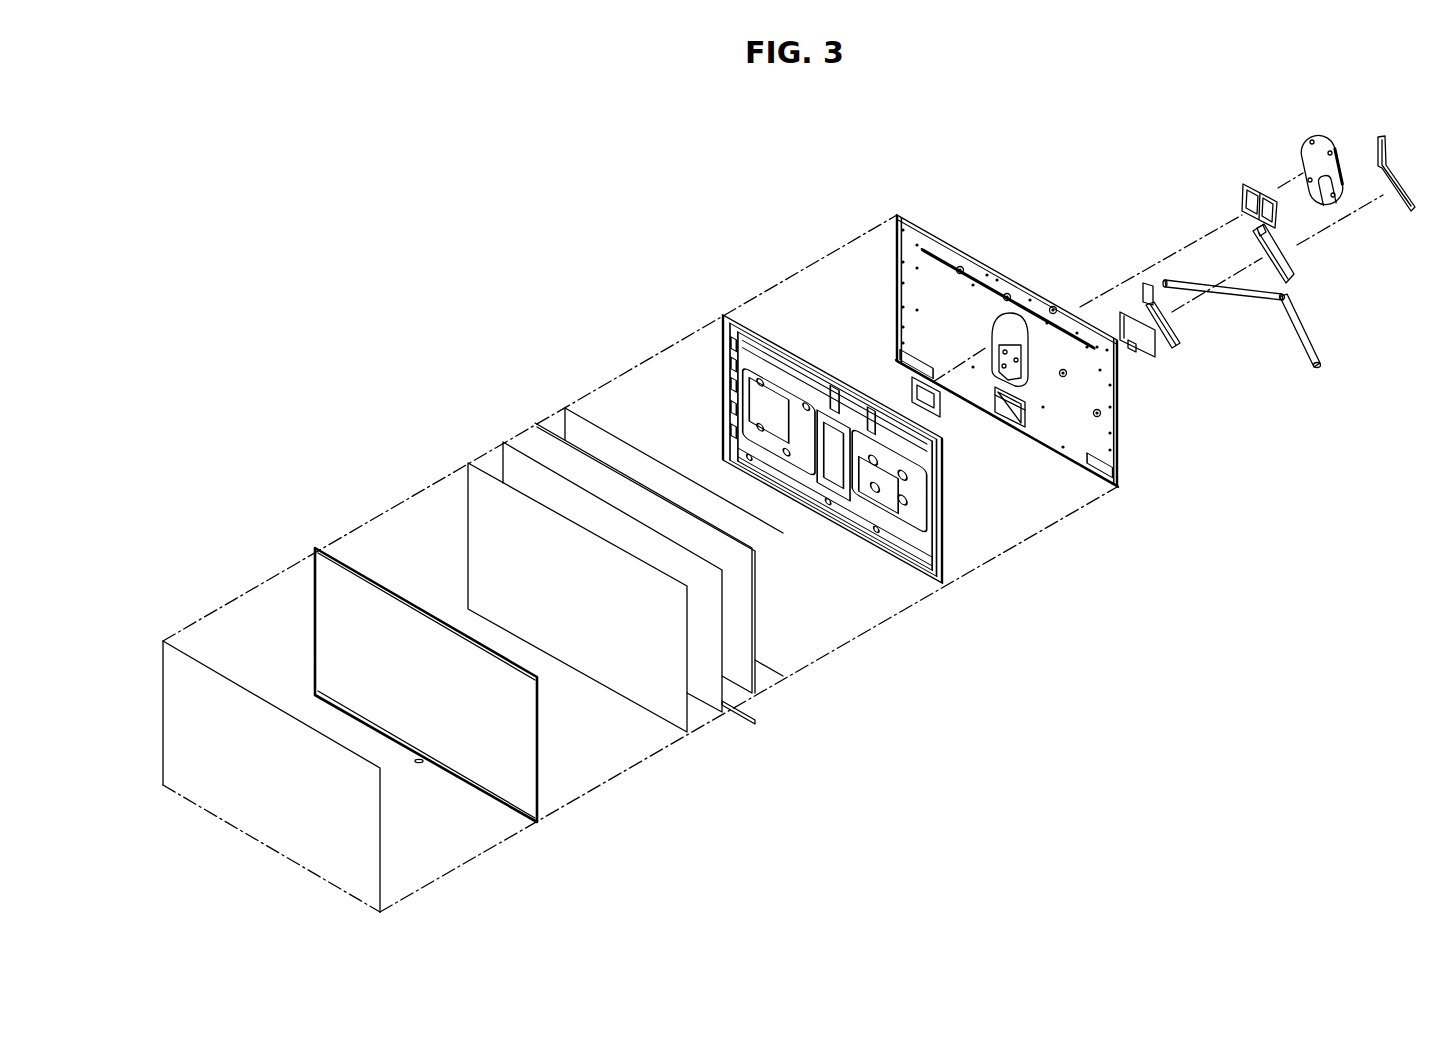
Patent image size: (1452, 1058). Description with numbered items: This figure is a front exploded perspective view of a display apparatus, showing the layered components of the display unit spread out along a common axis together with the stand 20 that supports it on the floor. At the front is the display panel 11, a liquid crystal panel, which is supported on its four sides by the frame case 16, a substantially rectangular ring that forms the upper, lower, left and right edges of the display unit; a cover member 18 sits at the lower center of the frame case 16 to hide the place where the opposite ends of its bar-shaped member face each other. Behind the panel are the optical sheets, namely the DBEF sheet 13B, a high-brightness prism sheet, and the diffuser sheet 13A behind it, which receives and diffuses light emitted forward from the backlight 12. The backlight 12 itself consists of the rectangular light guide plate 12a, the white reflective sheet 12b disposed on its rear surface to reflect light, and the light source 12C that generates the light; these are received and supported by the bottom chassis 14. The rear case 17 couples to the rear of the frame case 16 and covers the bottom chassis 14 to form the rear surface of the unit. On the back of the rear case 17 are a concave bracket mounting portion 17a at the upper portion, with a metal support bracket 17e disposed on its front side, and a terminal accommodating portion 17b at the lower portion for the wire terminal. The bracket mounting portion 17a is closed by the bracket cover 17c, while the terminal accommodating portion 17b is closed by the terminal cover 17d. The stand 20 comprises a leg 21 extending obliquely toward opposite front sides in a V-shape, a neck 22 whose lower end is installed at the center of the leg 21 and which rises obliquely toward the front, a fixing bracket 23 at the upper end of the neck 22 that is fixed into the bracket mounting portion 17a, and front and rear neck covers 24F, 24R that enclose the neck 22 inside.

The display panel 11 is at (186, 745).
The backlight 12 is at (711, 605).
The light guide plate 12a is at (745, 670).
The white reflective sheet 12b is at (778, 632).
The light source 12C is at (740, 723).
The diffuser sheet 13A is at (712, 703).
The DBEF sheet 13B is at (650, 700).
The bottom chassis 14 is at (945, 536).
The frame case 16 is at (546, 789).
The rear case 17 is at (1047, 356).
The bracket mounting portion 17a is at (1007, 325).
The terminal accommodating portion 17b is at (1010, 425).
The bracket cover 17c is at (1320, 134).
The terminal cover 17d is at (1147, 355).
The support bracket 17e is at (910, 383).
The cover member 18 is at (418, 766).
The stand 20 is at (1269, 249).
The leg 21 is at (1268, 303).
The neck 22 is at (1296, 262).
The fixing bracket 23 is at (1240, 190).
The neck cover 24F is at (1177, 333).
The neck cover 24R is at (1381, 136).